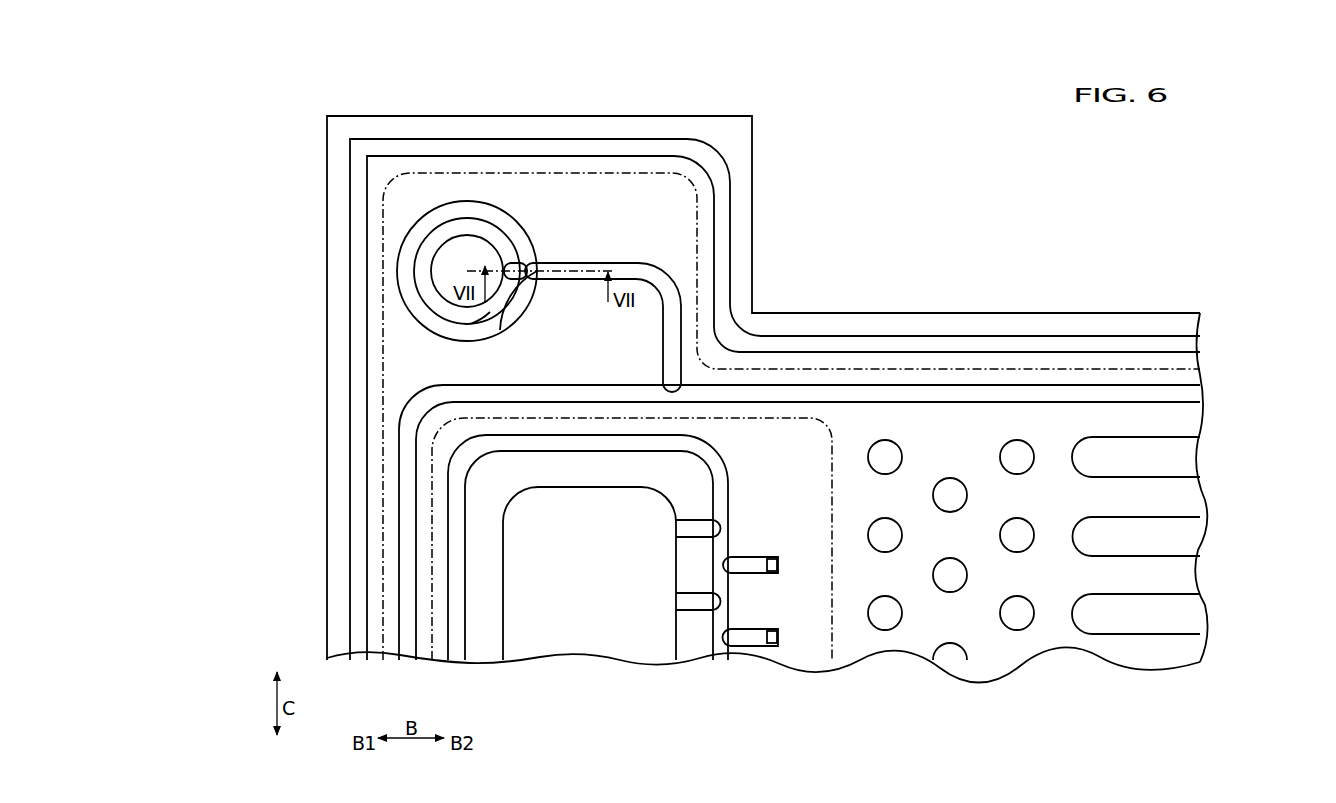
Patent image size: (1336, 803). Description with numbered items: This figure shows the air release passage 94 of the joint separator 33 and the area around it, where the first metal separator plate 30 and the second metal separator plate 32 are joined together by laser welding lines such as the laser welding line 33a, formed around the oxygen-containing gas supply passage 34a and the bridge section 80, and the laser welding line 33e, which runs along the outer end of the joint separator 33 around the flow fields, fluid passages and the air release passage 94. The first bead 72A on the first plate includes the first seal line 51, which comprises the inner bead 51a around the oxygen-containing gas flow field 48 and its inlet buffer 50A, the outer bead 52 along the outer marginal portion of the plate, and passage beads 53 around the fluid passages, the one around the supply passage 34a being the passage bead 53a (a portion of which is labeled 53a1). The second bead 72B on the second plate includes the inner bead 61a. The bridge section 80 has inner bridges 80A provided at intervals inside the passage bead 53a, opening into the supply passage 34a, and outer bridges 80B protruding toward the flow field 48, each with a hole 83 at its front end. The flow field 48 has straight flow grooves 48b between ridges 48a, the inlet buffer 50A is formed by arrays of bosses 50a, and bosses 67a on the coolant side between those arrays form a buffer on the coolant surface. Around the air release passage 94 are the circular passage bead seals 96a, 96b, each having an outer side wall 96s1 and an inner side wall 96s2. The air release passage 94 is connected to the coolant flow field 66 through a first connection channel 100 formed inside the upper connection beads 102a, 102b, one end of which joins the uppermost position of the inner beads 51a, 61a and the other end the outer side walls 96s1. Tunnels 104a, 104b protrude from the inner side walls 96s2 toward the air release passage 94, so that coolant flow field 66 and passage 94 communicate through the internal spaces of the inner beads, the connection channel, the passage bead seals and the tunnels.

The first metal separator plate 30 is at (325, 148).
The second metal separator plate 32 is at (325, 183).
The joint separator 33 is at (1042, 153).
The laser welding line 33a is at (432, 502).
The laser welding line 33e is at (1157, 367).
The oxygen-containing gas supply passage 34a is at (537, 617).
The oxygen-containing gas flow field 48 is at (1275, 442).
The ridges 48a is at (1180, 462).
The straight flow grooves 48b is at (1180, 502).
The inlet buffer 50A is at (1003, 610).
The bosses 50a is at (951, 535).
The first seal line 51 is at (880, 333).
The inner bead 51a is at (983, 390).
The outer bead 52 is at (842, 345).
The passage beads 53 is at (408, 462).
The passage bead 53a is at (588, 547).
The third layer wall inner surface 53a1 is at (458, 568).
The inner bead 61a is at (940, 390).
The coolant flow field 66 is at (1190, 577).
The bosses 67a is at (950, 493).
The first bead 72A is at (1043, 333).
The second bead 72B is at (1076, 333).
The bridge section 80 is at (789, 530).
The inner bridges 80A is at (692, 533).
The outer bridges 80B is at (753, 563).
The hole 83 is at (772, 575).
The air release passage 94 is at (448, 268).
The passage bead seal 96a is at (433, 218).
The passage bead seal 96b is at (470, 210).
The outer side walls 96s1 is at (496, 334).
The inner side walls 96s2 is at (463, 323).
The first connection channel 100 is at (572, 268).
The upper connection bead 102a is at (588, 273).
The upper connection bead 102b is at (622, 266).
The tunnel 104a is at (513, 260).
The tunnel 104b is at (507, 267).